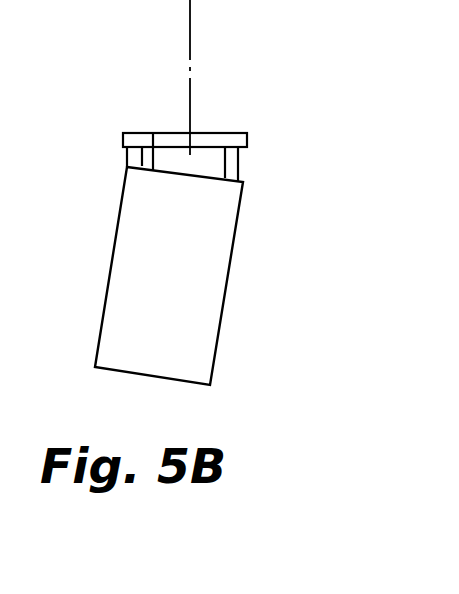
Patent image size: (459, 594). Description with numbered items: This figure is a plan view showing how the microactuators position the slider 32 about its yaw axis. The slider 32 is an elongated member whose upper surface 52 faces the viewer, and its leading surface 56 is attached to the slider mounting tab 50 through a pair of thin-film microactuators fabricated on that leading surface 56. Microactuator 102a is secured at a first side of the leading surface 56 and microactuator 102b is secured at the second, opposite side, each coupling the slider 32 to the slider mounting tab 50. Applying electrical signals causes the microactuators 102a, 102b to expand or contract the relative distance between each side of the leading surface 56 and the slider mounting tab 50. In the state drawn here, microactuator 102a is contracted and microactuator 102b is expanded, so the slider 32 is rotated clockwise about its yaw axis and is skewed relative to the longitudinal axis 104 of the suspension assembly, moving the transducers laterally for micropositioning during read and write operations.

The slider 32 is at (207, 210).
The slider mounting tab 50 is at (204, 146).
The upper surface 52 is at (183, 284).
The leading surface 56 is at (152, 133).
The microactuator 102a is at (127, 157).
The microactuator 102b is at (240, 167).
The longitudinal axis 104 is at (190, 22).